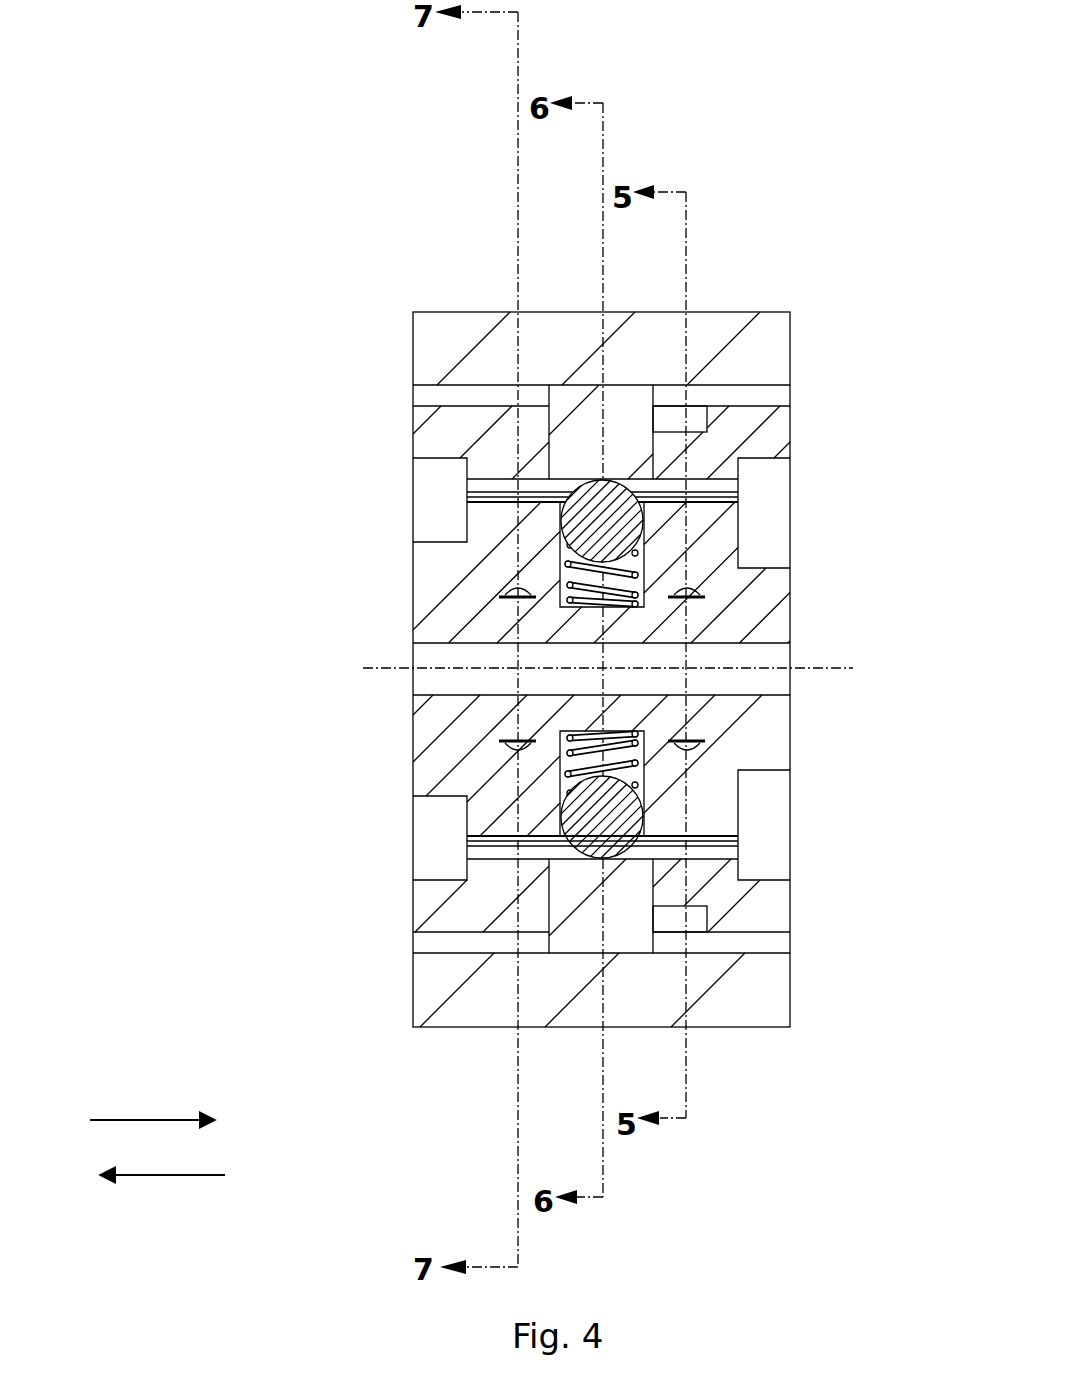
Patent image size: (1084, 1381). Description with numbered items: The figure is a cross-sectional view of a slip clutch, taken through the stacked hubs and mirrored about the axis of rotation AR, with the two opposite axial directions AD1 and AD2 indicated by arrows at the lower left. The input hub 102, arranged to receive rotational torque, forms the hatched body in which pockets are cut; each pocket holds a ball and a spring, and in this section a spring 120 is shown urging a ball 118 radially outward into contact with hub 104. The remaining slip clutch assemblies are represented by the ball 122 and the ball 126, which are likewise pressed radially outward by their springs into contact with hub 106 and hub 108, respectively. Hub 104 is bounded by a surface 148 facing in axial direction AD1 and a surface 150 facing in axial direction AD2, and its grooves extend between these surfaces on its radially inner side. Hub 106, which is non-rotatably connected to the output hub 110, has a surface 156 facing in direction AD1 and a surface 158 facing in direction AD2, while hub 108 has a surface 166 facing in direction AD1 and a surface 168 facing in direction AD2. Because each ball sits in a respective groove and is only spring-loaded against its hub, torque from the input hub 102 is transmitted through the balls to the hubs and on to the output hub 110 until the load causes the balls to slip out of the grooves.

The input hub 102 is at (404, 603).
The hub 104 is at (737, 400).
The hub 106 is at (581, 380).
The hub 108 is at (435, 398).
The output hub 110 is at (483, 311).
The ball 118 is at (565, 565).
The spring 120 is at (560, 516).
The ball 122 is at (694, 586).
The ball 126 is at (512, 594).
The surface 148 is at (792, 428).
The surface 150 is at (653, 445).
The surface 156 is at (690, 885).
The surface 158 is at (549, 900).
The surface 166 is at (550, 885).
The surface 168 is at (413, 908).
The axis of rotation AR is at (815, 666).
The axial direction AD1 is at (133, 1118).
The axial direction AD2 is at (160, 1178).